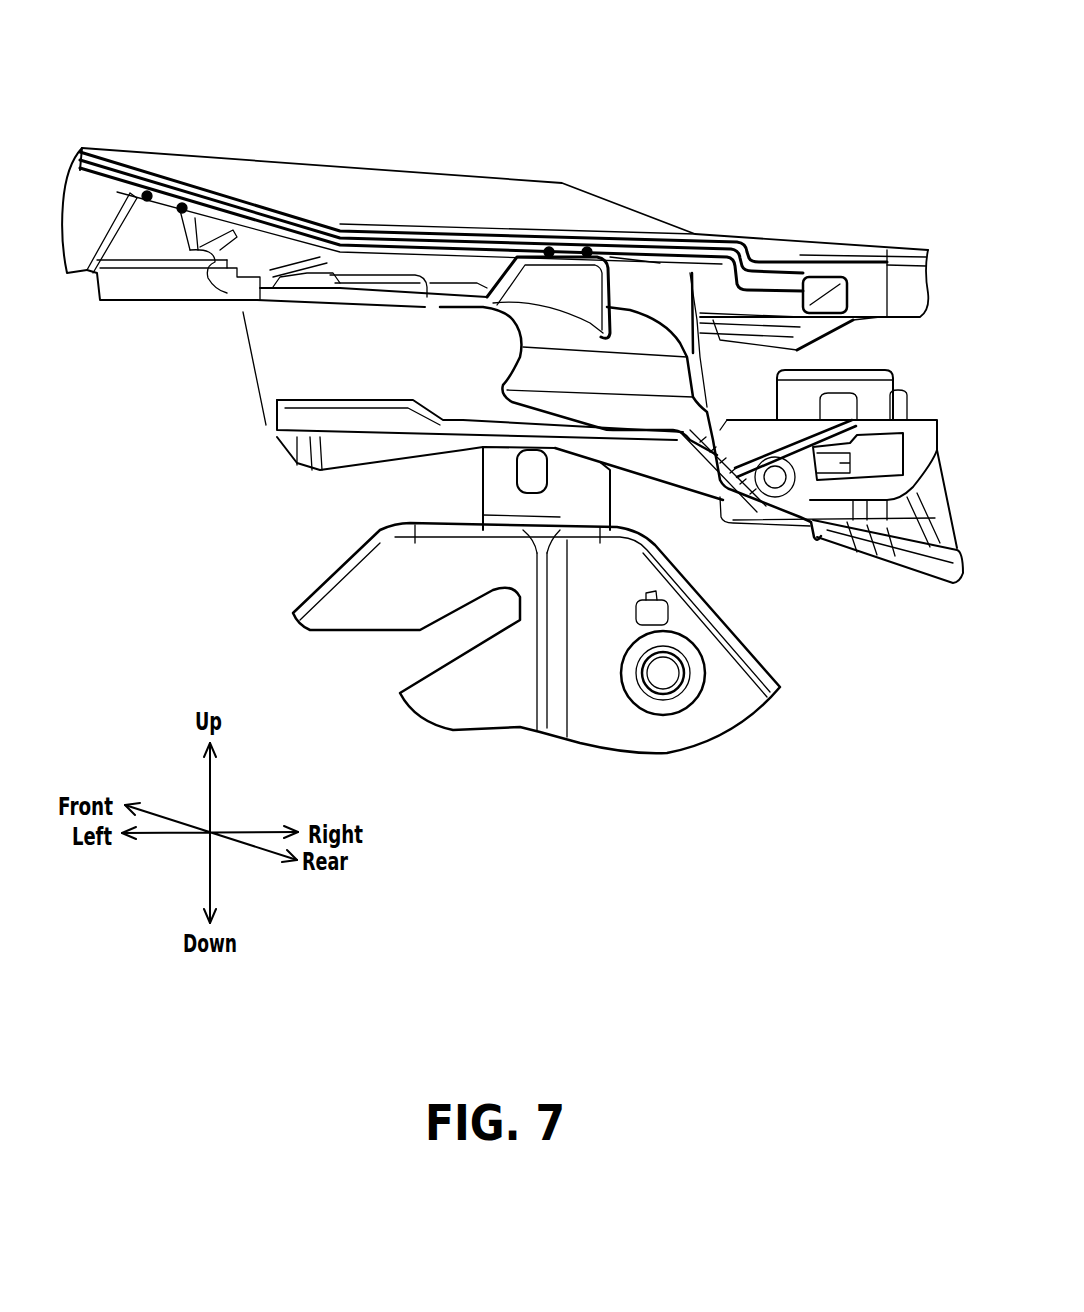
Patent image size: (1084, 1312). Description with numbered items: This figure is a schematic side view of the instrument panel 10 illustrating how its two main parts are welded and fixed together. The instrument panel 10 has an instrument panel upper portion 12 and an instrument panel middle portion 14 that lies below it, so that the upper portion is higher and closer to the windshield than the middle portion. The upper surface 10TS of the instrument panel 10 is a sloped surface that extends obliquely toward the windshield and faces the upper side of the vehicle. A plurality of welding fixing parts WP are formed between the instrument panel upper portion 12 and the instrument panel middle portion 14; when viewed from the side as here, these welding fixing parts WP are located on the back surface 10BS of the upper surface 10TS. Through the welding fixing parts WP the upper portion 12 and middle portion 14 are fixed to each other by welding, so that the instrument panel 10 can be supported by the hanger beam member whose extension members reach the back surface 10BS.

The instrument panel 10 is at (470, 115).
The instrument panel upper portion 12 is at (427, 186).
The instrument panel middle portion 14 is at (170, 247).
The upper surface 10TS is at (263, 186).
The back surface 10BS is at (109, 187).
The welding fixing parts WP is at (147, 200).